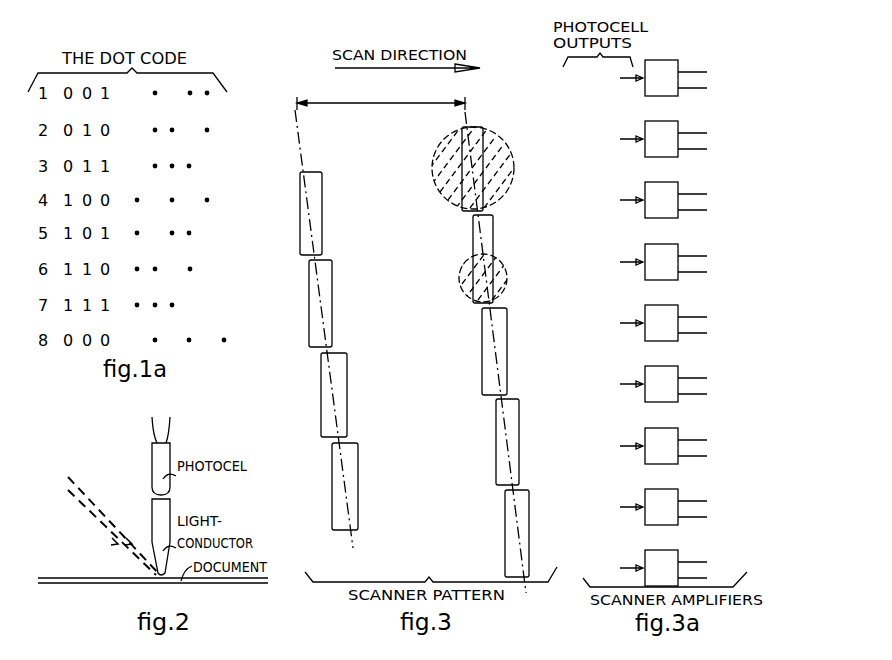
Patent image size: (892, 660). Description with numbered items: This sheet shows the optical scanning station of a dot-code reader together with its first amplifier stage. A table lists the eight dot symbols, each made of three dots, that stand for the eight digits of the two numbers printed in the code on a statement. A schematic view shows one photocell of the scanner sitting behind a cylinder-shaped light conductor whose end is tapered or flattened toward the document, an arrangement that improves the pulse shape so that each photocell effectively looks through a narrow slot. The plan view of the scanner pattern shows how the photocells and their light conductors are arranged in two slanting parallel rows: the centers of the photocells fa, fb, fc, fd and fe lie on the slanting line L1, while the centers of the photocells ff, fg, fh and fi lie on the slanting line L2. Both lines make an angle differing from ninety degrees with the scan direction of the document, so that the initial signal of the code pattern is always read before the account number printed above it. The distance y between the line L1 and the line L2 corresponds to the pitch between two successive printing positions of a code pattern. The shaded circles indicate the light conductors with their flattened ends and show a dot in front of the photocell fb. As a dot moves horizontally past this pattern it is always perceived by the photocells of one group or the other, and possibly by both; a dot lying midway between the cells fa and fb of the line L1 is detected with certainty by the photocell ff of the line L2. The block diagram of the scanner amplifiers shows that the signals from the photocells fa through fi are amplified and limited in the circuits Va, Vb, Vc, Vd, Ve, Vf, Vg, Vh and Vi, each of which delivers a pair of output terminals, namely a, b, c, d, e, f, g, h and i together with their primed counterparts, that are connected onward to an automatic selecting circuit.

In FIG. 3, the photocell fa is at (466, 176).
In FIG. 3A, the photocell fa is at (618, 78).
In FIG. 3, the photocell fb is at (484, 264).
In FIG. 3A, the photocell fb is at (618, 139).
In FIG. 3, the photocell fc is at (479, 351).
In FIG. 3A, the photocell fc is at (618, 200).
In FIG. 3, the photocell fd is at (491, 442).
In FIG. 3A, the photocell fd is at (618, 262).
In FIG. 3, the photocell fe is at (503, 533).
In FIG. 3A, the photocell fe is at (618, 323).
In FIG. 3, the photocell ff is at (325, 213).
In FIG. 3A, the photocell ff is at (618, 384).
In FIG. 3, the photocell fg is at (336, 303).
In FIG. 3A, the photocell fg is at (618, 446).
In FIG. 3, the photocell fh is at (349, 395).
In FIG. 3A, the photocell fh is at (618, 507).
In FIG. 3, the photocell fi is at (357, 486).
In FIG. 3A, the photocell fi is at (618, 568).
In FIG. 3A, the amplifier circuit Va is at (661, 78).
In FIG. 3A, the amplifier circuit Vb is at (661, 139).
In FIG. 3A, the amplifier circuit Vc is at (661, 200).
In FIG. 3A, the amplifier circuit Vd is at (661, 262).
In FIG. 3A, the amplifier circuit Ve is at (661, 323).
In FIG. 3A, the amplifier circuit Vf is at (661, 384).
In FIG. 3A, the amplifier circuit Vg is at (661, 446).
In FIG. 3A, the amplifier circuit Vh is at (661, 507).
In FIG. 3A, the amplifier circuit Vi is at (661, 568).
In FIG. 3A, the output terminal a is at (702, 79).
In FIG. 3A, the output terminal b is at (703, 140).
In FIG. 3A, the output terminal c is at (702, 201).
In FIG. 3A, the output terminal d is at (703, 263).
In FIG. 3A, the output terminal e is at (702, 324).
In FIG. 3A, the output terminal f is at (700, 385).
In FIG. 3A, the output terminal g is at (703, 447).
In FIG. 3A, the output terminal h is at (703, 508).
In FIG. 3A, the output terminal i is at (700, 569).
In FIG. 3, the slanting line L1 is at (495, 346).
In FIG. 3, the slanting line L2 is at (313, 323).
In FIG. 3, the distance between lines y is at (381, 94).